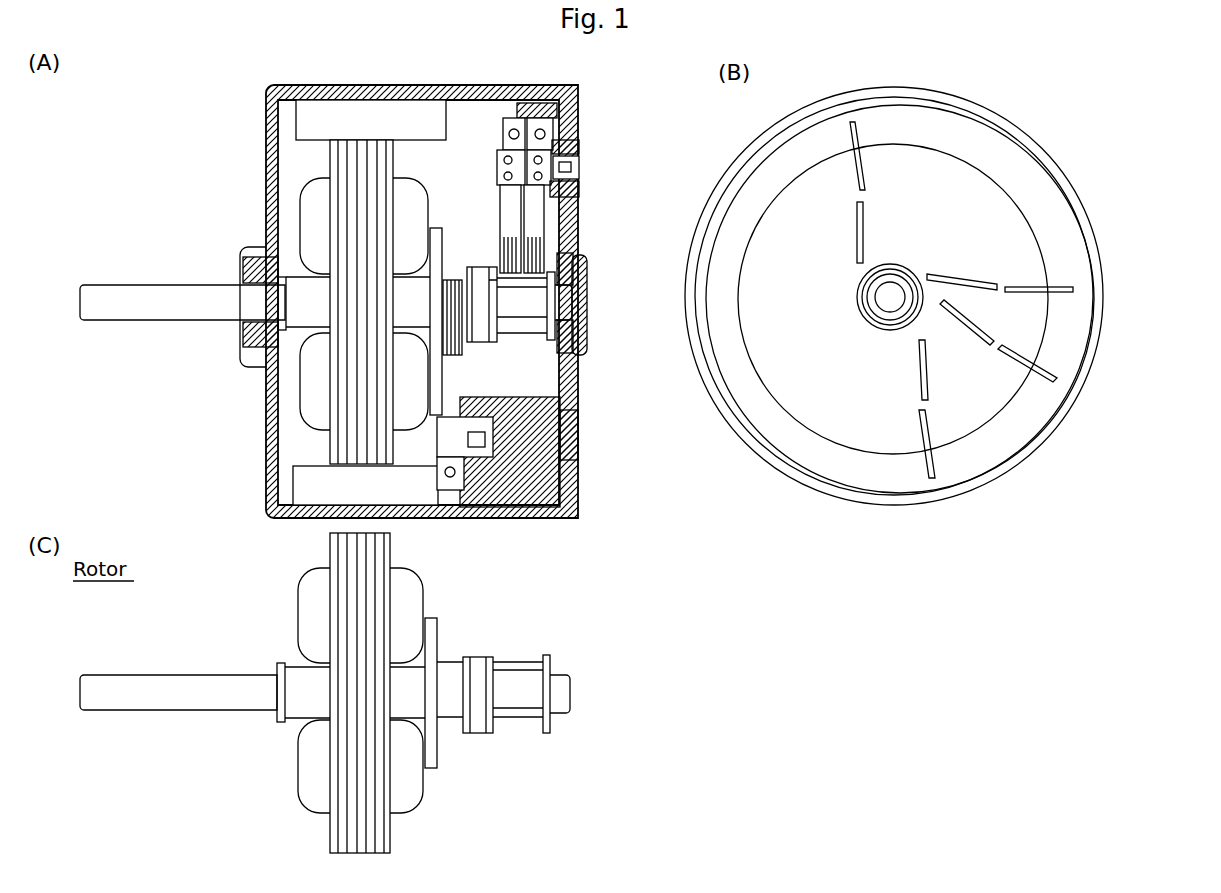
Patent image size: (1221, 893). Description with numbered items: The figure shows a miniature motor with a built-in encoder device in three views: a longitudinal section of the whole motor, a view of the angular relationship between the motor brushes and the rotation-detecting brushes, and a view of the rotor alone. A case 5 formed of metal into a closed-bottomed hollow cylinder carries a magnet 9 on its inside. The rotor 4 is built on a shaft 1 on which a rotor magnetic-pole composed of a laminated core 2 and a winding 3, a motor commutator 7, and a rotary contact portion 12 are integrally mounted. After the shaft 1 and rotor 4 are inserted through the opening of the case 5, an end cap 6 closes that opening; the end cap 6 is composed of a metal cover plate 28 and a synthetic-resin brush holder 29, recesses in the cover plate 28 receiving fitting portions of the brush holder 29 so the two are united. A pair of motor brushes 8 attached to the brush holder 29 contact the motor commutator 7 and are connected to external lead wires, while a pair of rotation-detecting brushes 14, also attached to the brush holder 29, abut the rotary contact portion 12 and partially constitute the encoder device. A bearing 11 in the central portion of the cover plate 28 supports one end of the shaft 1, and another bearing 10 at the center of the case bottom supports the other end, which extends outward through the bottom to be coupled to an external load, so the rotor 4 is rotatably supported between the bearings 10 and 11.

The shaft 1 is at (129, 322).
The laminated core 2 is at (360, 393).
The winding 3 is at (315, 372).
The rotor 4 is at (374, 301).
The case 5 is at (268, 470).
The end cap 6 is at (590, 155).
The motor commutator 7 is at (447, 663).
The motor brushes 8 is at (437, 370).
The magnet 9 is at (307, 120).
The bearing 10 is at (240, 347).
The bearing 11 is at (575, 335).
The rotary contact portion 12 is at (527, 300).
The rotation-detecting brushes 14 is at (540, 205).
The cover plate 28 is at (586, 265).
The brush holder 29 is at (580, 432).